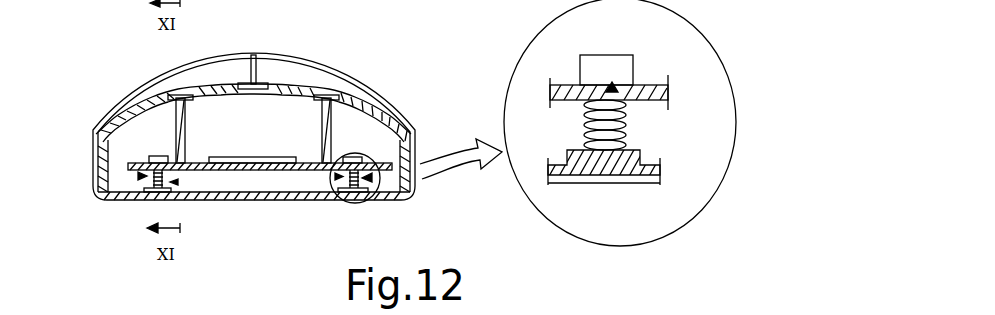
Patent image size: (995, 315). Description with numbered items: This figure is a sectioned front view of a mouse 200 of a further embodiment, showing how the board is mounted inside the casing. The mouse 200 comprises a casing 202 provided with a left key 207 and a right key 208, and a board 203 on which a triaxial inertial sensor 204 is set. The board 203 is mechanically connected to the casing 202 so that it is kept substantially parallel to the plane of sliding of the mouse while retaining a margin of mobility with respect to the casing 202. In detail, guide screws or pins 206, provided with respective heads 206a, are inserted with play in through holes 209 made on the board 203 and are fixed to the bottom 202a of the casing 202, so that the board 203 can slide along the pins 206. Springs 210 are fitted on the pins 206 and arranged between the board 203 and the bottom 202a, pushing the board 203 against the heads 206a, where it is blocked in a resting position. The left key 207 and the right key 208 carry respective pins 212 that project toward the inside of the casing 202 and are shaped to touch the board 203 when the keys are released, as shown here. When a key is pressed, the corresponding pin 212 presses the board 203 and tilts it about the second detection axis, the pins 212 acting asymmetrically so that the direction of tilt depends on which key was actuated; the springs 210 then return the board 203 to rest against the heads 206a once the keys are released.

The mouse 200 is at (448, 79).
The casing 202 is at (283, 53).
The bottom of the casing 202a is at (273, 198).
The board 203 is at (250, 171).
The triaxial inertial sensor 204 is at (282, 157).
The guide screws or pins 206 is at (176, 183).
The heads of the pins 206a is at (147, 158).
The left key 207 is at (393, 104).
The right key 208 is at (187, 72).
The through holes 209 is at (137, 176).
The springs 210 is at (152, 180).
The pins of the keys 212 is at (177, 133).